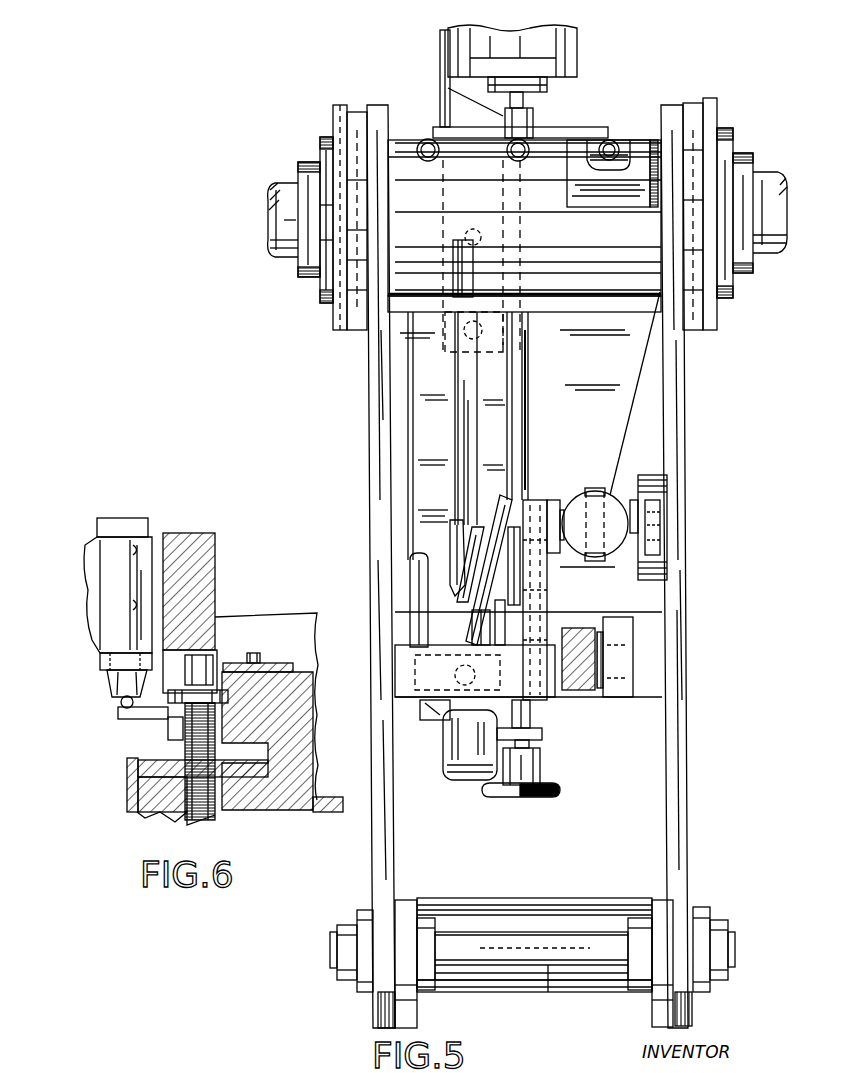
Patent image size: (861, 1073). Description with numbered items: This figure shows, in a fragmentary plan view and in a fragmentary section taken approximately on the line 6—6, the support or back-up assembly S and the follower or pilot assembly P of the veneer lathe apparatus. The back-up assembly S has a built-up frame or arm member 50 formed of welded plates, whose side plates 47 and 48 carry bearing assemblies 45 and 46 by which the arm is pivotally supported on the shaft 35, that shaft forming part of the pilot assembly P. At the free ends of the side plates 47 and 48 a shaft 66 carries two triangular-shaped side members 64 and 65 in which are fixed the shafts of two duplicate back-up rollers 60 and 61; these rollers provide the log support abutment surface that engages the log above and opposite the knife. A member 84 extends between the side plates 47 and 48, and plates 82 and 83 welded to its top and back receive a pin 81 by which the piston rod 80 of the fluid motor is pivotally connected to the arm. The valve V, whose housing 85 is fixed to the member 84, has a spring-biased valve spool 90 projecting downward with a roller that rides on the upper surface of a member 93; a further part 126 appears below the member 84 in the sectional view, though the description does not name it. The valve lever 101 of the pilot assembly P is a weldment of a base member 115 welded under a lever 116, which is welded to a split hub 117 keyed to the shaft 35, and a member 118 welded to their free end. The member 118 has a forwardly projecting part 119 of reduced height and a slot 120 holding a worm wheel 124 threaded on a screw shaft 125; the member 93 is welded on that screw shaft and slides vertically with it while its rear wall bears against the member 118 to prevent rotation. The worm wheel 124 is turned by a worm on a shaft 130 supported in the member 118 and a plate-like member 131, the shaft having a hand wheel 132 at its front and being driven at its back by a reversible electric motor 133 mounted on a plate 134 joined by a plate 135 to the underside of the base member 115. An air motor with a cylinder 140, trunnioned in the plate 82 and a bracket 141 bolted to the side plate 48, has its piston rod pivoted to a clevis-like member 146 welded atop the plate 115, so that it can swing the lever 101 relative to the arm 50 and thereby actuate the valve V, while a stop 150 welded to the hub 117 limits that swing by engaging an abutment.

In FIG. 5, the shaft 35 is at (268, 250).
In FIG. 5, the bearing assembly 45 is at (320, 148).
In FIG. 5, the bearing assembly 46 is at (720, 120).
In FIG. 5, the side plate 47 is at (372, 438).
In FIG. 6, the side plate 47 is at (255, 620).
In FIG. 5, the side plate 48 is at (686, 416).
In FIG. 5, the frame or arm member 50 is at (692, 634).
In FIG. 5, the back-up roller 60 is at (468, 992).
In FIG. 5, the back-up roller 61 is at (540, 888).
In FIG. 5, the side member 64 is at (417, 1012).
In FIG. 5, the side member 65 is at (652, 1010).
In FIG. 5, the shaft 66 is at (548, 992).
In FIG. 5, the piston rod 80 is at (585, 690).
In FIG. 5, the pin 81 is at (622, 665).
In FIG. 5, the plate 82 is at (547, 598).
In FIG. 5, the plate 83 is at (622, 627).
In FIG. 6, the member 84 is at (203, 533).
In FIG. 5, the valve housing 85 is at (455, 780).
In FIG. 6, the valve housing 85 is at (84, 588).
In FIG. 6, the valve spool 90 is at (120, 703).
In FIG. 6, the member 93 is at (132, 720).
In FIG. 5, the valve lever 101 is at (602, 432).
In FIG. 6, the valve lever 101 is at (140, 818).
In FIG. 5, the base member 115 is at (585, 378).
In FIG. 6, the base member 115 is at (313, 812).
In FIG. 5, the lever 116 is at (455, 412).
In FIG. 6, the lever 116 is at (310, 664).
In FIG. 5, the hub 117 is at (538, 135).
In FIG. 5, the member 118 is at (542, 733).
In FIG. 6, the forwardly projecting part 119 is at (168, 730).
In FIG. 6, the slot 120 is at (243, 745).
In FIG. 6, the worm wheel 124 is at (168, 762).
In FIG. 6, the screw shaft 125 is at (215, 818).
In FIG. 6, the clamp plate 126 is at (214, 645).
In FIG. 5, the shaft 130 is at (529, 446).
In FIG. 5, the plate-like member 131 is at (545, 740).
In FIG. 6, the plate-like member 131 is at (127, 770).
In FIG. 5, the hand wheel 132 is at (560, 790).
In FIG. 5, the reversible electric motor 133 is at (577, 48).
In FIG. 5, the plate 134 is at (440, 64).
In FIG. 5, the plate 135 is at (450, 100).
In FIG. 5, the cylinder 140 is at (572, 508).
In FIG. 5, the bracket 141 is at (656, 475).
In FIG. 5, the clevis-like member 146 is at (594, 490).
In FIG. 5, the stop 150 is at (618, 205).
In FIG. 5, the section line 6 is at (470, 602).
In FIG. 5, the support or back-up assembly S is at (370, 672).
In FIG. 5, the valve V is at (440, 780).
In FIG. 6, the valve V is at (92, 533).
In FIG. 5, the follower or pilot assembly P is at (625, 443).